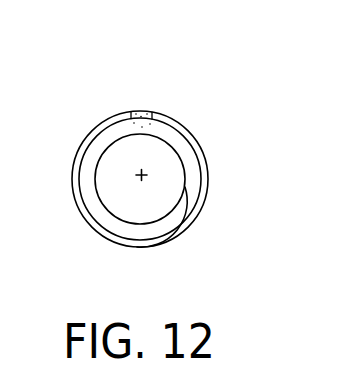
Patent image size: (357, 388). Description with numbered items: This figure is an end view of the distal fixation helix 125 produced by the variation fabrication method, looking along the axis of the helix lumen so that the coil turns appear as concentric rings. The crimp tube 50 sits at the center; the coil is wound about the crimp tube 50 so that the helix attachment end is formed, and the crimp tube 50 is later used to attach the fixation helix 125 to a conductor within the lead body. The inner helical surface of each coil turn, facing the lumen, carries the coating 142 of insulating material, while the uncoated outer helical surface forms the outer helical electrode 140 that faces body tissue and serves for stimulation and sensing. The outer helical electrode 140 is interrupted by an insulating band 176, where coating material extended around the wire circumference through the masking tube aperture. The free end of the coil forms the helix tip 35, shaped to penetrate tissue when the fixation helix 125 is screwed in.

The fixation helix 125 is at (153, 48).
The outer helical electrode 140 is at (208, 177).
The coating 142 is at (93, 157).
The band 176 is at (137, 110).
The helix tip 35 is at (172, 245).
The crimp tube 50 is at (153, 210).